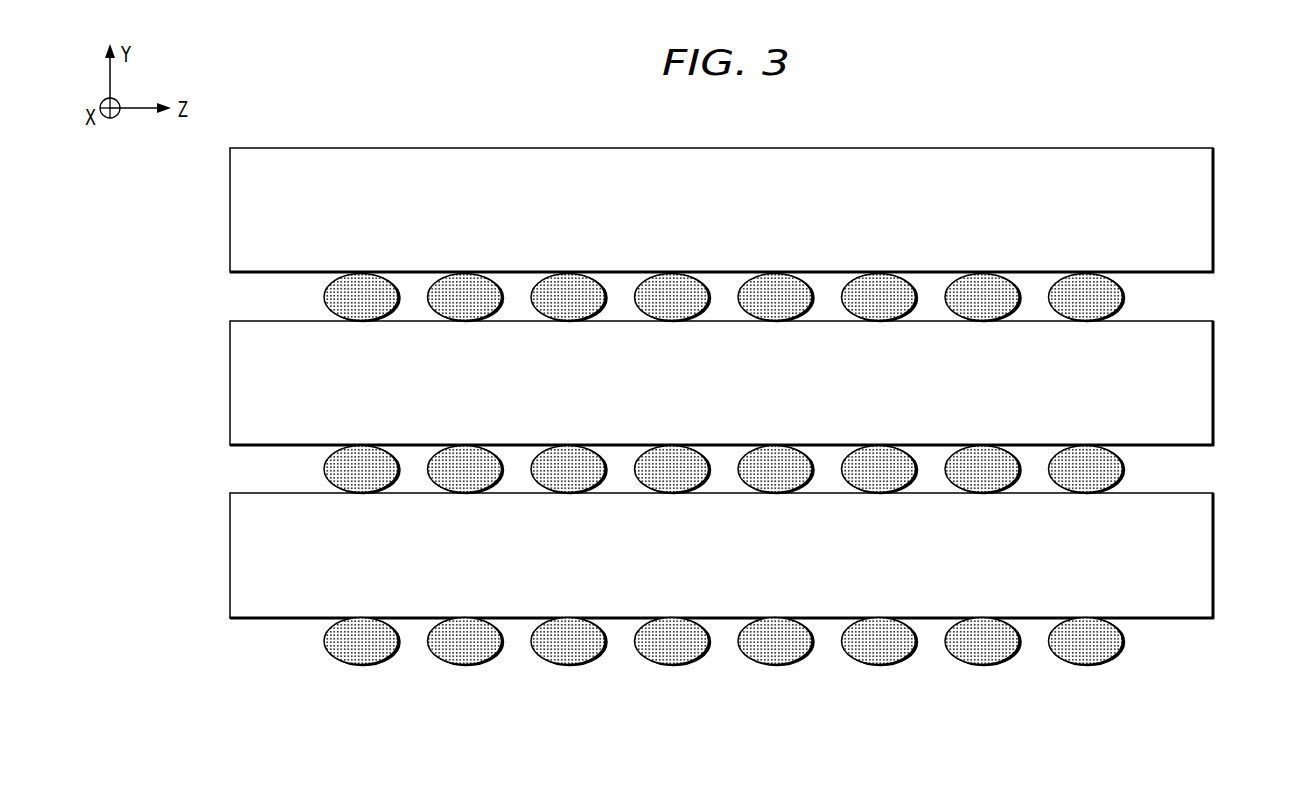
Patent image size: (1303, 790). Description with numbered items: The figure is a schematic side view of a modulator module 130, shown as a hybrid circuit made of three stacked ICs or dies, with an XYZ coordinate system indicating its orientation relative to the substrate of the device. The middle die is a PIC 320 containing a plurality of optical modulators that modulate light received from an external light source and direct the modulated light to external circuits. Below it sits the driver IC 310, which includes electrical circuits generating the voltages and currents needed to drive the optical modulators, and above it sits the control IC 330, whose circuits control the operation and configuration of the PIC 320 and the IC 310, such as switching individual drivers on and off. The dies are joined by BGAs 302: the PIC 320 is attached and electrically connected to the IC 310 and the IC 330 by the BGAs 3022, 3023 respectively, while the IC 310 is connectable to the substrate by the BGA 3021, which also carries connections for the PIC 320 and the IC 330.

The modulator module 130 is at (739, 115).
The IC 330 is at (1214, 212).
The PIC 320 is at (1214, 385).
The IC 310 is at (1214, 557).
The BGAs 302 is at (641, 470).
The BGA 3023 is at (281, 293).
The BGA 3022 is at (281, 466).
The BGA 3021 is at (281, 638).